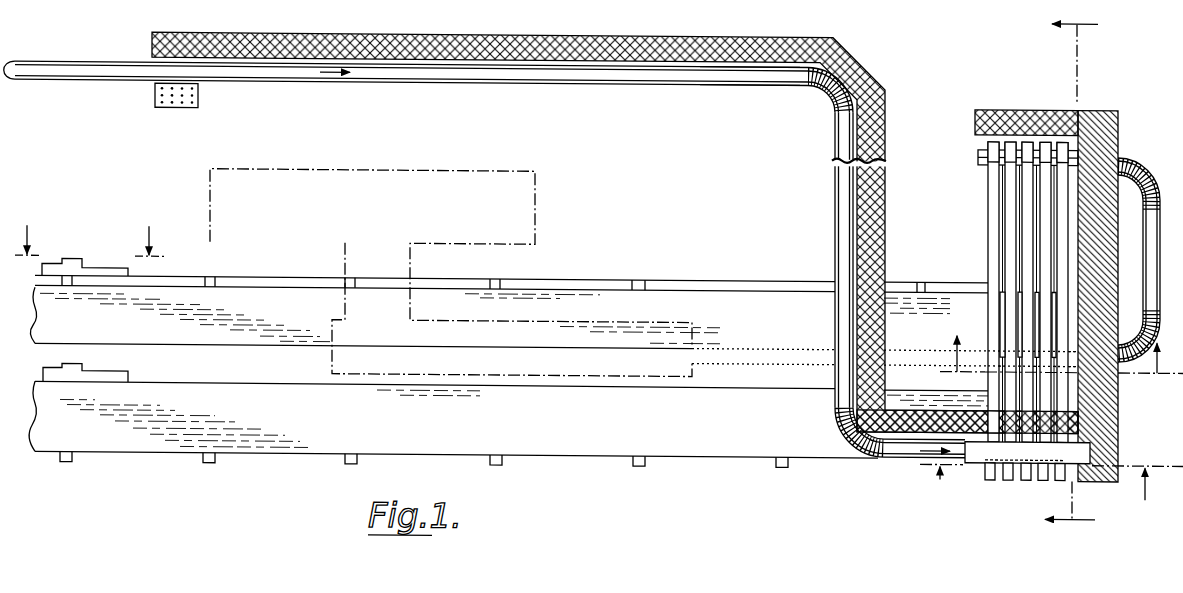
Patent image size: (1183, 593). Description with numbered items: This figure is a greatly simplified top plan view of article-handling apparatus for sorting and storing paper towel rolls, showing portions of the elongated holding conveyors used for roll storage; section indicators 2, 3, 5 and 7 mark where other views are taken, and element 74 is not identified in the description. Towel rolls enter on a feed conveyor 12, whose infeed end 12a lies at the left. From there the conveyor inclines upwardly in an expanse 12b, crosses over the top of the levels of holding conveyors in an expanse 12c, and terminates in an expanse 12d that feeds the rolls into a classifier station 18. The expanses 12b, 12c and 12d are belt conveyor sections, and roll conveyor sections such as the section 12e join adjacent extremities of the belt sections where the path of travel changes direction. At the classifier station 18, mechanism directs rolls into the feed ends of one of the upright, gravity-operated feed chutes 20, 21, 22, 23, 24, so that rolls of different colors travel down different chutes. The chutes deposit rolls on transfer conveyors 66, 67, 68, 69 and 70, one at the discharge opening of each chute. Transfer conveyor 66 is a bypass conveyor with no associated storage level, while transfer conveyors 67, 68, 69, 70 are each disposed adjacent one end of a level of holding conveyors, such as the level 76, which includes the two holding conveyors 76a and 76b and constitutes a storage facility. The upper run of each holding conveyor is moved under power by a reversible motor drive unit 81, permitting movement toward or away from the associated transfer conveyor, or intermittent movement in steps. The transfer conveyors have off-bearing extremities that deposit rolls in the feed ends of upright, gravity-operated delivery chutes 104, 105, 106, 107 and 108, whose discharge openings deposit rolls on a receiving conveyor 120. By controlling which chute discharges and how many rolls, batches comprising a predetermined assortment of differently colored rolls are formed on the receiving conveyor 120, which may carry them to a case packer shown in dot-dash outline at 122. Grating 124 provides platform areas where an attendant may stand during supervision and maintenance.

The feed conveyor 12 is at (484, 259).
The infeed end 12a is at (108, 71).
The upwardly inclined expanse 12b is at (749, 111).
The crossover expanse 12c is at (834, 225).
The terminal expanse 12d is at (849, 437).
The roll conveyor section 12e is at (817, 87).
The grating 124 is at (822, 33).
The case packer 122 is at (537, 211).
The guide strip 74 is at (620, 293).
The level of holding conveyors 76 is at (553, 339).
The holding conveyor 76a is at (803, 325).
The holding conveyor 76b is at (801, 428).
The motor drive unit 81 is at (79, 256).
The transfer conveyor 66 is at (992, 170).
The transfer conveyor 67 is at (1010, 195).
The transfer conveyor 68 is at (1028, 209).
The transfer conveyor 69 is at (1045, 225).
The transfer conveyor 70 is at (1063, 244).
The delivery chute 104 is at (988, 137).
The delivery chute 105 is at (1011, 134).
The delivery chute 106 is at (1029, 134).
The delivery chute 107 is at (1046, 134).
The delivery chute 108 is at (1066, 134).
The receiving conveyor 120 is at (1137, 154).
The classifier station 18 is at (953, 444).
The feed chute 20 is at (990, 472).
The feed chute 21 is at (1008, 472).
The feed chute 22 is at (1027, 472).
The feed chute 23 is at (1044, 472).
The feed chute 24 is at (1062, 472).
The section line 2- 2 is at (1080, 273).
The section line 3- 3 is at (1060, 365).
The section line 5- 5 is at (1051, 495).
The section line 7- 7 is at (90, 229).